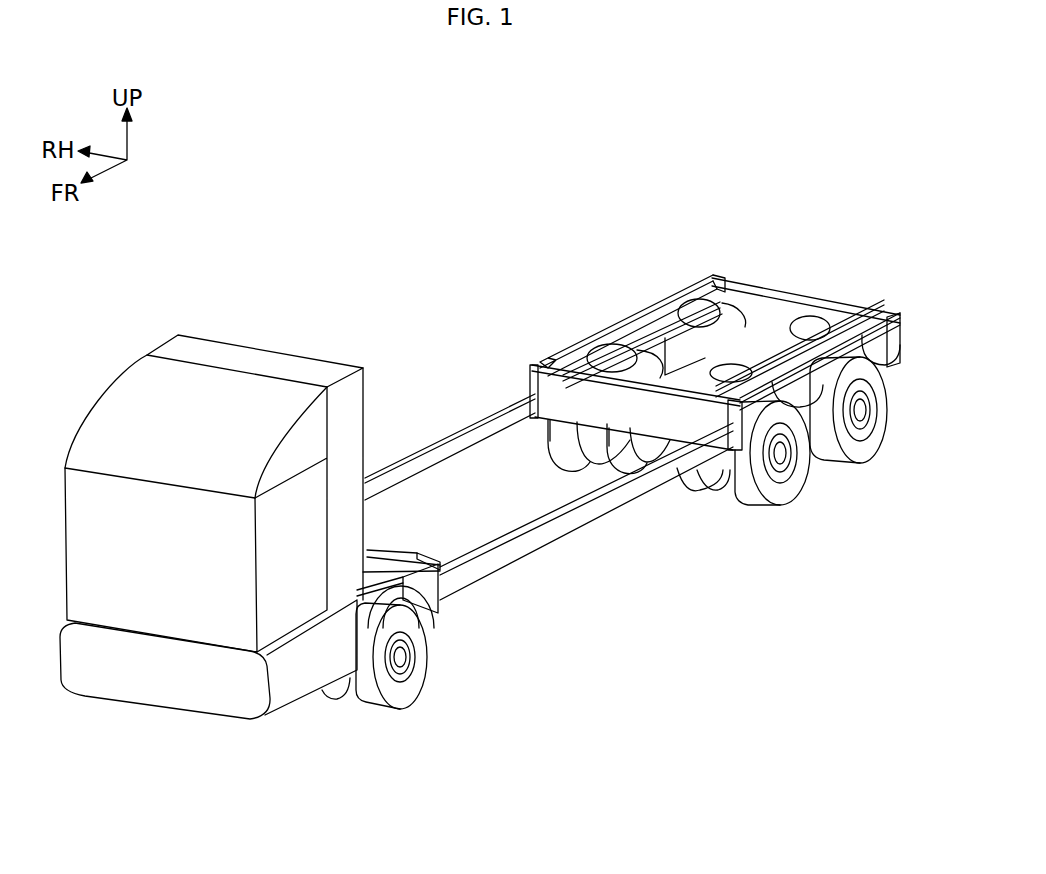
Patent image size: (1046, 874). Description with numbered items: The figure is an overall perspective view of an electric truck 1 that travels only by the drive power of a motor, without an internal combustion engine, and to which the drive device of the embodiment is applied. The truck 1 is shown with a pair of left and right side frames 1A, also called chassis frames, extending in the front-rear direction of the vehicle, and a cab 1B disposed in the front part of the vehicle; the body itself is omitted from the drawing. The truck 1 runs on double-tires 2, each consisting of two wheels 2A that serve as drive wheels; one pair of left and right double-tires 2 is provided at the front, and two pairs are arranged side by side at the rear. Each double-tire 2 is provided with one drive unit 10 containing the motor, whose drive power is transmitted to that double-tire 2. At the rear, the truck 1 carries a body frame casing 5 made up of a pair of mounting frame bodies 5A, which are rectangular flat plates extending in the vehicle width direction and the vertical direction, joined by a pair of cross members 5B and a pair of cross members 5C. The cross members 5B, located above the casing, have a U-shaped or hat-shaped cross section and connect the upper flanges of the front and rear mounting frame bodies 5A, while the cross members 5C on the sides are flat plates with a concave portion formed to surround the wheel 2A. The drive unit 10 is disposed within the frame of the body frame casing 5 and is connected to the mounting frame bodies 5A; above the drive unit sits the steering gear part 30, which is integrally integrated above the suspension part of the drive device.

The electric truck 1 is at (174, 267).
The side frame 1A is at (415, 438).
The cab 1B is at (287, 336).
The double-tire 2 is at (429, 693).
The wheel 2A is at (548, 451).
The body frame casing 5 is at (459, 587).
The mounting frame body 5A is at (383, 550).
The cross member 5B is at (410, 555).
The cross member 5C is at (433, 590).
The drive unit 10 is at (560, 433).
The steering gear part 30 is at (607, 350).